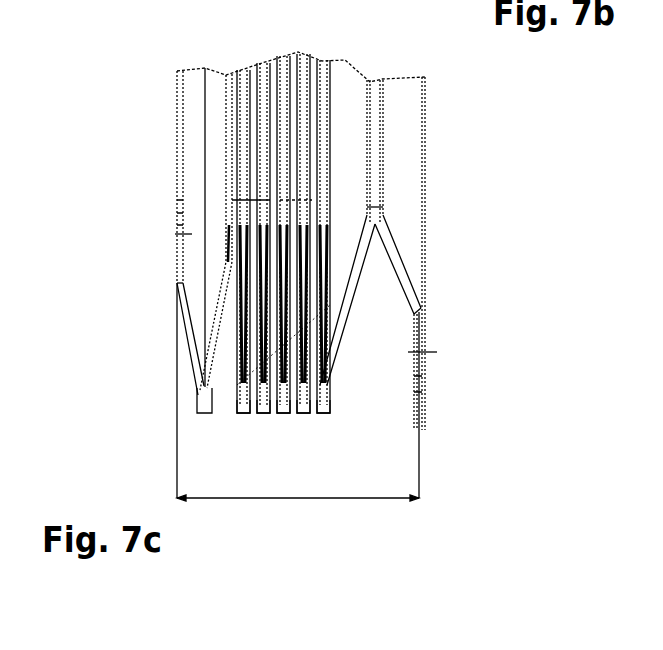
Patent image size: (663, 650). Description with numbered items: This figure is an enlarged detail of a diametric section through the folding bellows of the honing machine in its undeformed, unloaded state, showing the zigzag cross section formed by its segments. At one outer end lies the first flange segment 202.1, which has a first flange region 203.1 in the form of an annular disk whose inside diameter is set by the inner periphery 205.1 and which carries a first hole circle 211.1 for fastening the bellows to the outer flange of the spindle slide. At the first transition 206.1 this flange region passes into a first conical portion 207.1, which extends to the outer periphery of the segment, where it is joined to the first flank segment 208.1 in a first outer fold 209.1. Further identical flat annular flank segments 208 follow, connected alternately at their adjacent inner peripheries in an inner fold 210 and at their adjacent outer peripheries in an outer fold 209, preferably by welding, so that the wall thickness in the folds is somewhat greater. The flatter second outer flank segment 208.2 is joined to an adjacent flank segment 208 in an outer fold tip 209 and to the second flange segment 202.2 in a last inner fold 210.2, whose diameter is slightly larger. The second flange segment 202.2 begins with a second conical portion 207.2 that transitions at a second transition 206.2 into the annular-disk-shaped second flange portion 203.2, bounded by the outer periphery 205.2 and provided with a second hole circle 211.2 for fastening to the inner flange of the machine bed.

The first flange segment 202.1 is at (181, 363).
The second flange segment 202.2 is at (437, 455).
The first flange region 203.1 is at (178, 214).
The second flange portion 203.2 is at (428, 378).
The inner periphery 205.1 is at (178, 212).
The outer periphery 205.2 is at (420, 392).
The first transition 206.1 is at (177, 283).
The second transition 206.2 is at (425, 313).
The first conical portion 207.1 is at (185, 323).
The second conical portion 207.2 is at (410, 282).
The flank segment 208 is at (320, 205).
The first flank segment 208.1 is at (221, 275).
The second outer flank segment 208.2 is at (352, 265).
The outer fold 209 is at (241, 413).
The first outer fold 209.1 is at (202, 410).
The inner fold 210 is at (232, 200).
The last inner fold 210.2 is at (378, 206).
The first hole circle 211.1 is at (192, 235).
The second hole circle 211.2 is at (437, 350).